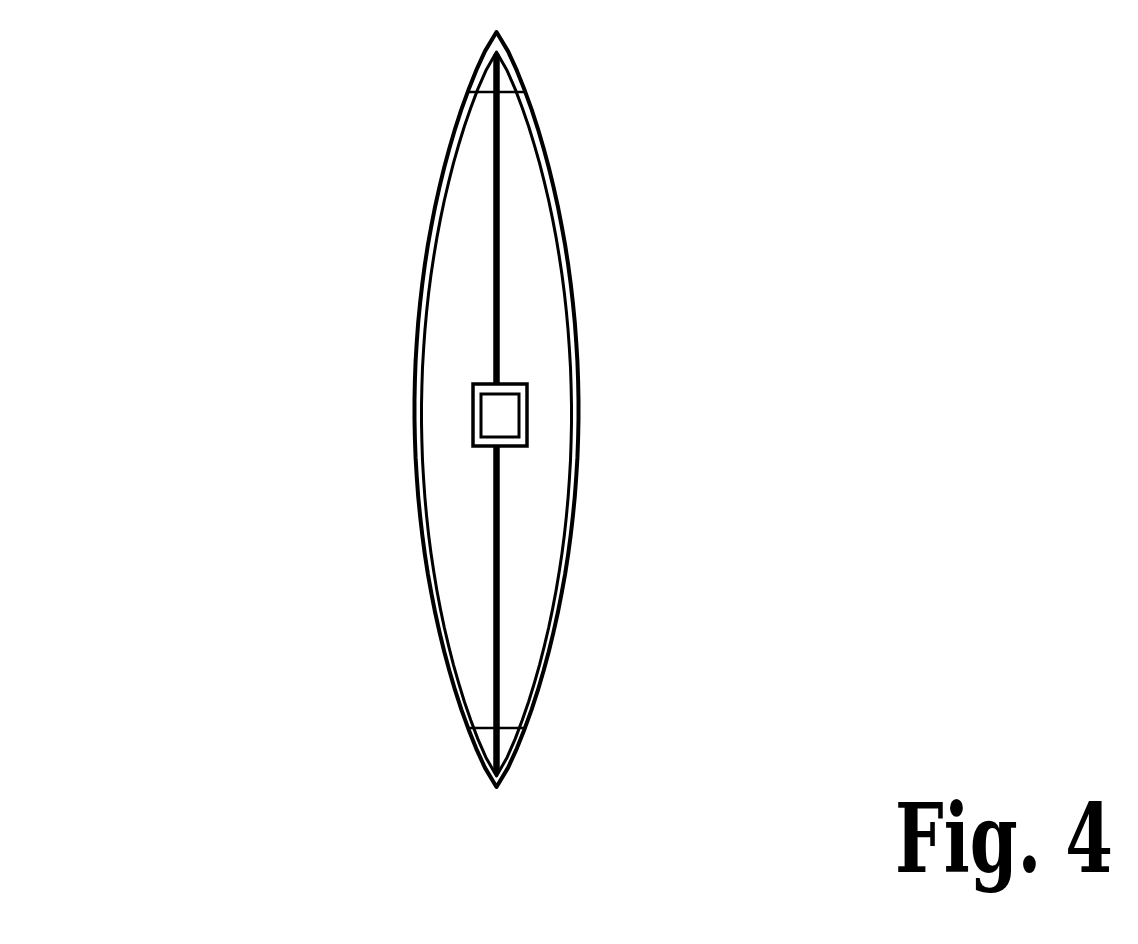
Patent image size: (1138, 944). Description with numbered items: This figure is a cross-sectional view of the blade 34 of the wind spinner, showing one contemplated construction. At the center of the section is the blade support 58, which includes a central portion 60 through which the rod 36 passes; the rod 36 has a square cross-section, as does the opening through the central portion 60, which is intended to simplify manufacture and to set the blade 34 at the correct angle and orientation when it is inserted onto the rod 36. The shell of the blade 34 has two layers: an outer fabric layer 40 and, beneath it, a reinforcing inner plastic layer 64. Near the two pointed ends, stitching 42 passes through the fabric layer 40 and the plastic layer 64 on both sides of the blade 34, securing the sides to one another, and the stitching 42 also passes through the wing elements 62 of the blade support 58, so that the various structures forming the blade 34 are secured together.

The blade 34 is at (338, 470).
The rod 36 is at (474, 416).
The fabric layer 40 is at (578, 469).
The stitching 42 is at (497, 91).
The blade support 58 is at (491, 352).
The central portion 60 is at (528, 413).
The wing elements 62 is at (500, 281).
The plastic layer 64 is at (571, 526).